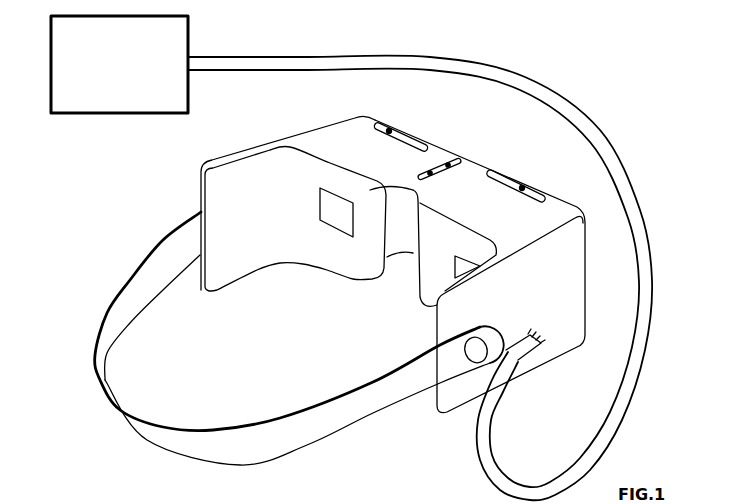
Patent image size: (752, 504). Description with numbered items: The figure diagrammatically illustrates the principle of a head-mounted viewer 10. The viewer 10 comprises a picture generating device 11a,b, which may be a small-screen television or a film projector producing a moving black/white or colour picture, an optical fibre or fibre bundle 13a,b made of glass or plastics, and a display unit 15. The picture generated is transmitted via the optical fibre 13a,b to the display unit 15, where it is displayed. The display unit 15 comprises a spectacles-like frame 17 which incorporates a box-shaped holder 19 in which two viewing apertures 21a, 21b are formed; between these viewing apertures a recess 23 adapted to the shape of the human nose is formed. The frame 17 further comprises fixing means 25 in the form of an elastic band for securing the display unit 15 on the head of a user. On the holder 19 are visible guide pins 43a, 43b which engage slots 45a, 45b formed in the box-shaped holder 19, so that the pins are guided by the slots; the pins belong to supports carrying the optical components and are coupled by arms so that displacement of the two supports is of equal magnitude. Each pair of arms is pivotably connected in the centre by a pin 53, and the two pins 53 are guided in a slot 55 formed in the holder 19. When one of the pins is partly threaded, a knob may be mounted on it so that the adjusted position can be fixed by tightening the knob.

The viewer 10 is at (482, 48).
The picture generating device 11a,b is at (180, 32).
The optical fibre or fibre bundle 13a,b is at (423, 62).
The display unit 15 is at (200, 151).
The spectacles-like frame 17 is at (346, 265).
The box-shaped holder 19 is at (563, 213).
The viewing aperture 21a is at (340, 207).
The viewing aperture 21b is at (457, 266).
The recess 23 is at (406, 237).
The fixing means 25 is at (378, 400).
The guide pin 43a is at (416, 120).
The guide pin 43b is at (525, 170).
The slot 45a is at (423, 148).
The slot 45b is at (502, 178).
The pin 53 is at (447, 173).
The slot 55 is at (417, 178).